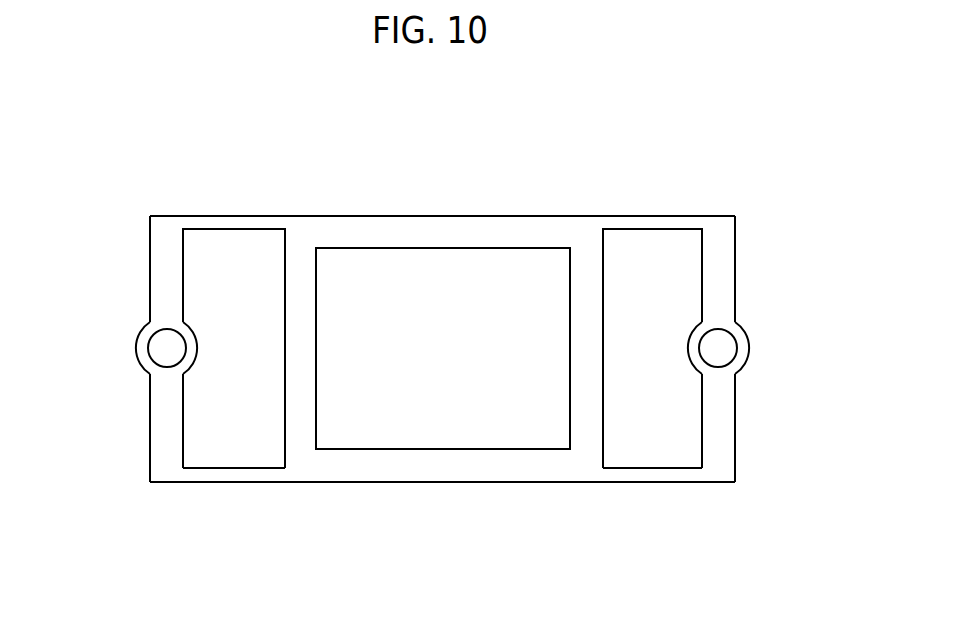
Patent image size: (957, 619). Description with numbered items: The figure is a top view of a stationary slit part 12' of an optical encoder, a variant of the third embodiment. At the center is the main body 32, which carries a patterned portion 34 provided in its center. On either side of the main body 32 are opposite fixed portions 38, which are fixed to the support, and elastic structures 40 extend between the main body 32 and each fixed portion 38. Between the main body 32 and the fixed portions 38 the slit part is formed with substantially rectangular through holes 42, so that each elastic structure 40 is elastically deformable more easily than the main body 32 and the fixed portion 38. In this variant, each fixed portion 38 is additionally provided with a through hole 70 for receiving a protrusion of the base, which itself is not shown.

The stationary slit part 12' is at (452, 317).
The main body 32 is at (524, 216).
The patterned portion 34 is at (478, 449).
The fixed portion 38 is at (163, 273).
The elastic structure 40 is at (219, 223).
The through hole 42 is at (221, 444).
The through hole 70 is at (138, 352).